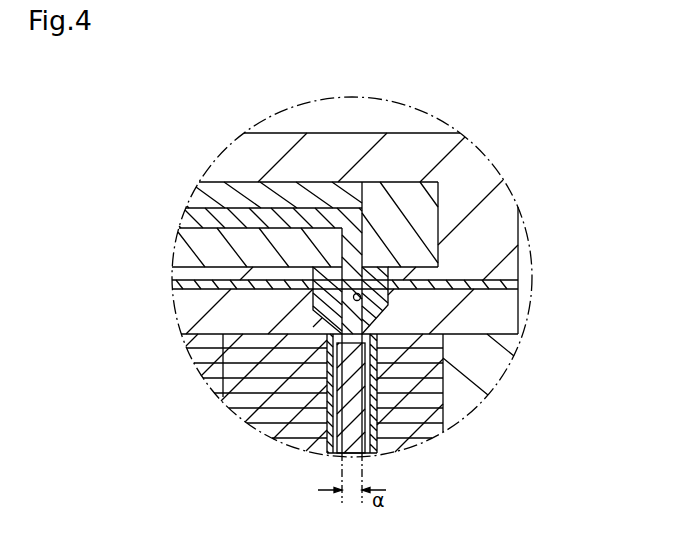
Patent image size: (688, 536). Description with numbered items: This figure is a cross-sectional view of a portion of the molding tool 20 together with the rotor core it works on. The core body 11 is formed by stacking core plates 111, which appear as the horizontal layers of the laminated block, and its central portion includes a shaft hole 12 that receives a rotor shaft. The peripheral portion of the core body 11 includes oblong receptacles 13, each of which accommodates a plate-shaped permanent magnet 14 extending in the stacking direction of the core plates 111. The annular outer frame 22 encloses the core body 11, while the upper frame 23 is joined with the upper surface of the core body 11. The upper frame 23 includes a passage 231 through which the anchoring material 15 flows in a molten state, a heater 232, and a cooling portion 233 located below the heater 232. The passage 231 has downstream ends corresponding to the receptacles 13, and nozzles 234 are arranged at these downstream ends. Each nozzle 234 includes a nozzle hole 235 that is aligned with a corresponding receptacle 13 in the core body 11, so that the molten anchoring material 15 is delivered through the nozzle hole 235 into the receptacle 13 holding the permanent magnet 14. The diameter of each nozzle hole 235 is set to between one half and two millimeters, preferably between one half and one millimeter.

The molding tool 20 is at (362, 131).
The upper frame 23 is at (273, 142).
The outer frame 22 is at (498, 350).
The passage 231 is at (353, 210).
The heater 232 is at (430, 227).
The cooling portion 233 is at (499, 278).
The nozzle 234 is at (379, 272).
The nozzle hole 235 is at (364, 297).
The receptacle 13 is at (315, 300).
The core body 11 is at (445, 400).
The core plate 111 is at (446, 355).
The shaft hole 12 is at (223, 384).
The permanent magnet 14 is at (327, 453).
The anchoring material 15 is at (383, 450).